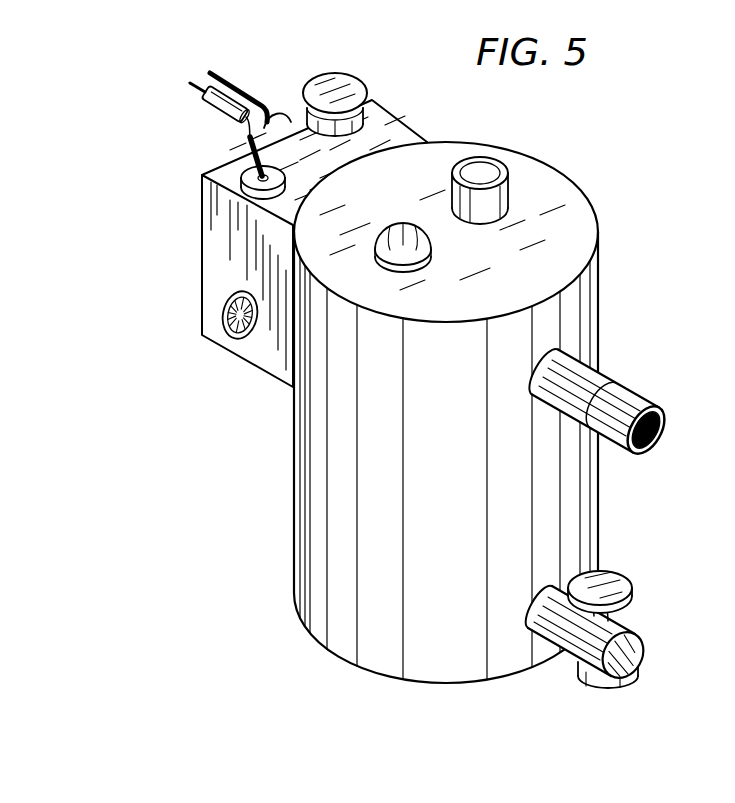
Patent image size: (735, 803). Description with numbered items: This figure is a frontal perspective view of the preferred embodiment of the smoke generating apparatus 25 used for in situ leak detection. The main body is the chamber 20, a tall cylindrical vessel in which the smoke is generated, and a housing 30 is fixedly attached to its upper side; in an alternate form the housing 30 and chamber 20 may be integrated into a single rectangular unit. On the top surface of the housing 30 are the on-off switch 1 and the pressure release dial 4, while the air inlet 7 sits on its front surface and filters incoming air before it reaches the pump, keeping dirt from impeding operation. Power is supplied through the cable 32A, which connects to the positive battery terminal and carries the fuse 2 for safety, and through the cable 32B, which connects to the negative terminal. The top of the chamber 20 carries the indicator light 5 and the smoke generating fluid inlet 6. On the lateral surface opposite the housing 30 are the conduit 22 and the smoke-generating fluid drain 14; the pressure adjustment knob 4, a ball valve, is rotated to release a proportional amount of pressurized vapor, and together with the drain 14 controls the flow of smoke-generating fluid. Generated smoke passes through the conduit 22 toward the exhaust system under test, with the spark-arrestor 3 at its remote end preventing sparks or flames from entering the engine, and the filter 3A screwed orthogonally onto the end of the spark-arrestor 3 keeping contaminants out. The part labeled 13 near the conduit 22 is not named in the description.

The on-off switch 1 is at (240, 142).
The fuse 2 is at (228, 118).
The spark-arrestor 3 is at (650, 403).
The filter 3A is at (663, 433).
The pressure release dial 4 is at (350, 80).
The indicator light 5 is at (423, 243).
The smoke generating fluid inlet 6 is at (490, 160).
The air inlet 7 is at (225, 302).
The outlet pipe 13 is at (590, 370).
The smoke-generating fluid drain 14 is at (630, 623).
The chamber 20 is at (305, 512).
The conduit 22 is at (640, 460).
The smoke generating apparatus 25 is at (565, 172).
The housing 30 is at (258, 360).
The cable 32A is at (192, 86).
The cable 32B is at (223, 75).